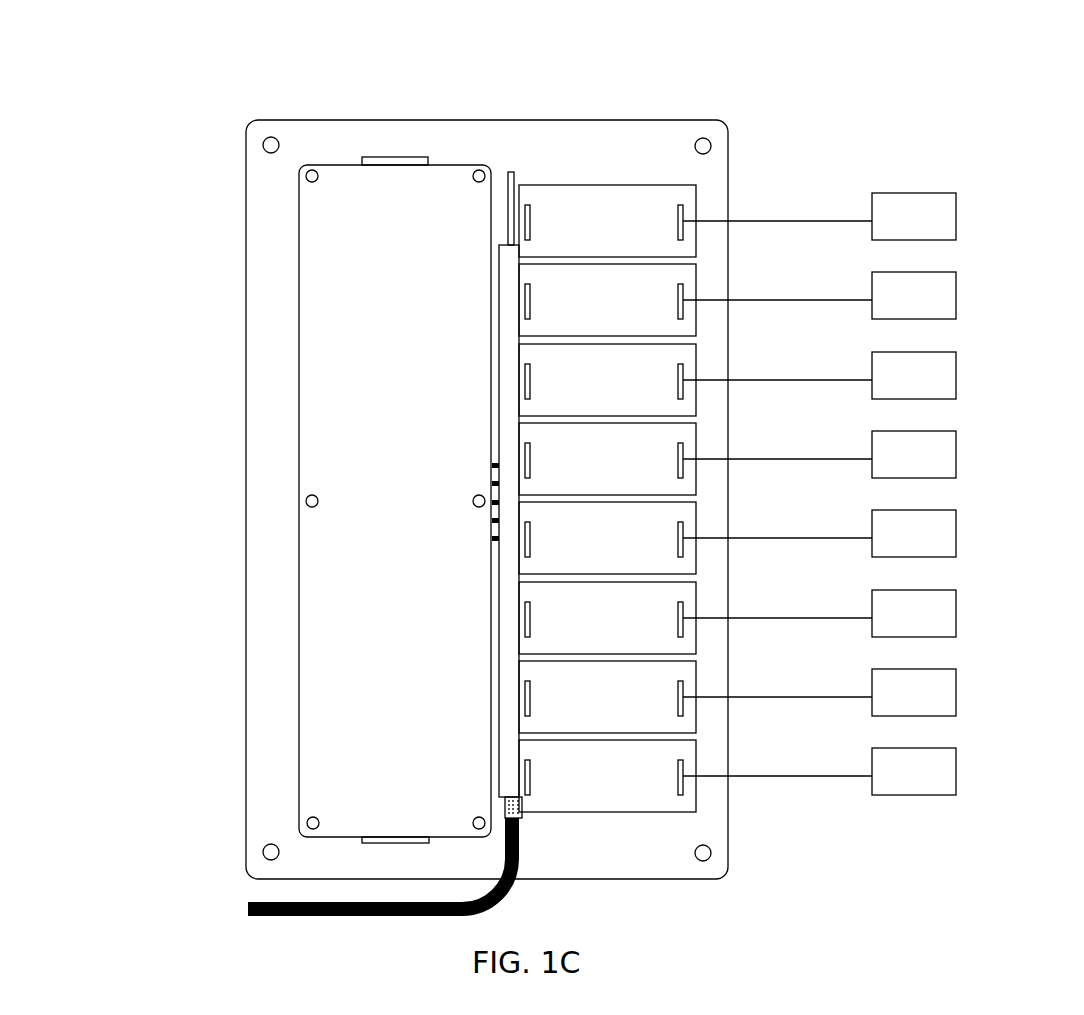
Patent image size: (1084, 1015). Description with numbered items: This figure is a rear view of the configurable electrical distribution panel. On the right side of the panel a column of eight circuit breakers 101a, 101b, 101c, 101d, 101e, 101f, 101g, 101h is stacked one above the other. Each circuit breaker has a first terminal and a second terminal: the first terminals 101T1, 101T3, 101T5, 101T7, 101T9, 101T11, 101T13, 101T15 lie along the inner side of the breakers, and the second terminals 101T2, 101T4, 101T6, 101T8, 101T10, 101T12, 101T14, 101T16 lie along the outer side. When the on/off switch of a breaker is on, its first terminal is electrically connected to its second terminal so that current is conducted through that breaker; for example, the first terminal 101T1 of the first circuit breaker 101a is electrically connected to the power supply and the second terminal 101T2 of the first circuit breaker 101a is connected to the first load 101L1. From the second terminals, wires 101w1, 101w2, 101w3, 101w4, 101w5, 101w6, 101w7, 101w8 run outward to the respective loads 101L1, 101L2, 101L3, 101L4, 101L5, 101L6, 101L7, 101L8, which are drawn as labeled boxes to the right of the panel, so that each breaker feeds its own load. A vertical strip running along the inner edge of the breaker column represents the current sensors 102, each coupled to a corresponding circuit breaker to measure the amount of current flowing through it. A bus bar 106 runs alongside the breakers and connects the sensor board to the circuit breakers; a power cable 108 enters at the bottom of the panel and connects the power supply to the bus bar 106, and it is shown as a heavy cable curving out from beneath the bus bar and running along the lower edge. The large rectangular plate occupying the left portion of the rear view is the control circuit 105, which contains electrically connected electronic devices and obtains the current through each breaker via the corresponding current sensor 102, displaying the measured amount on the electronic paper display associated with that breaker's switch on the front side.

The current sensor 102 is at (506, 276).
The control circuit 105 is at (352, 310).
The bus bar 106 is at (520, 175).
The power cable 108 is at (258, 898).
The first circuit breaker 101a is at (607, 221).
The circuit breaker 101b is at (607, 300).
The circuit breaker 101c is at (607, 380).
The circuit breaker 101d is at (607, 459).
The circuit breaker 101e is at (607, 538).
The circuit breaker 101f is at (607, 618).
The circuit breaker 101g is at (607, 697).
The circuit breaker 101h is at (607, 776).
The first terminal 101T1 is at (540, 215).
The second terminal 101T2 is at (670, 215).
The first terminal 101T3 is at (540, 294).
The second terminal 101T4 is at (670, 294).
The first terminal 101T5 is at (540, 374).
The second terminal 101T6 is at (670, 374).
The first terminal 101T7 is at (540, 453).
The second terminal 101T8 is at (670, 453).
The first terminal 101T9 is at (540, 532).
The second terminal 101T10 is at (667, 532).
The first terminal 101T11 is at (544, 612).
The second terminal 101T12 is at (667, 612).
The first terminal 101T13 is at (544, 691).
The second terminal 101T14 is at (667, 691).
The first terminal 101T15 is at (544, 770).
The second terminal 101T16 is at (667, 770).
The wire 101w1 is at (777, 208).
The wire 101w2 is at (777, 287).
The wire 101w3 is at (777, 367).
The wire 101w4 is at (777, 446).
The wire 101w5 is at (777, 525).
The wire 101w6 is at (777, 605).
The wire 101w7 is at (777, 684).
The wire 101w8 is at (777, 763).
The first load 101L1 is at (914, 216).
The load 101L2 is at (914, 295).
The load 101L3 is at (914, 375).
The load 101L4 is at (914, 454).
The load 101L5 is at (914, 533).
The load 101L6 is at (914, 613).
The load 101L7 is at (914, 692).
The load 101L8 is at (914, 771).